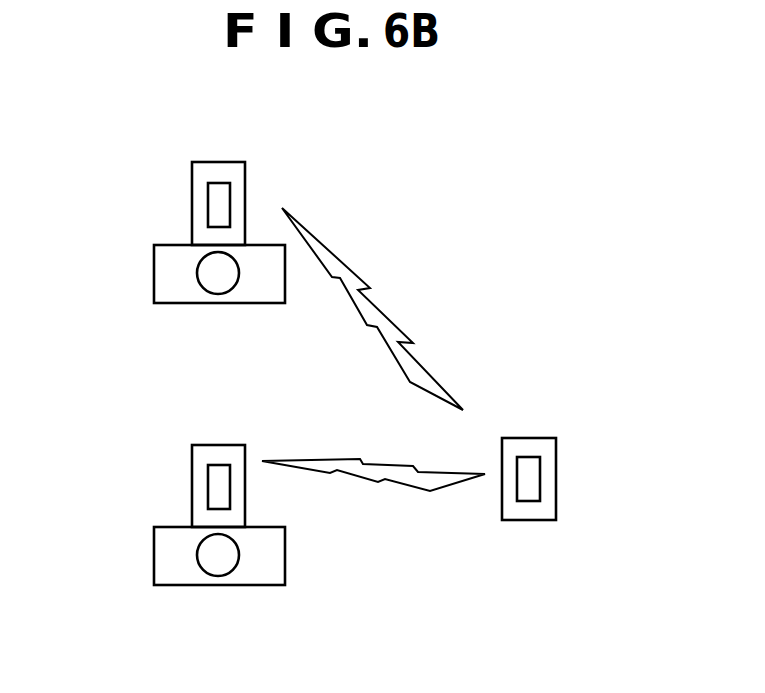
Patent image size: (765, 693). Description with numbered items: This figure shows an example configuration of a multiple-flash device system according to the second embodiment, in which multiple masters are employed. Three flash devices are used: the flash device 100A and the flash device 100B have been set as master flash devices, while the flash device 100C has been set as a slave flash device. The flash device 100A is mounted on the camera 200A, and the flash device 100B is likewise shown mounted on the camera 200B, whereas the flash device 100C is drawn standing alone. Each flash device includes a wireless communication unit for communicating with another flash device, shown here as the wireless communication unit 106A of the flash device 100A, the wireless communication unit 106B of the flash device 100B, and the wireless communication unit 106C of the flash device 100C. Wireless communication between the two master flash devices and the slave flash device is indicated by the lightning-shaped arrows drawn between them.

The flash device 100A is at (230, 162).
The wireless communication unit 106A is at (215, 209).
The camera 200A is at (253, 303).
The flash device 100B is at (230, 445).
The wireless communication unit 106B is at (215, 492).
The camera 200B is at (253, 585).
The flash device 100C is at (537, 438).
The wireless communication unit 106C is at (535, 482).